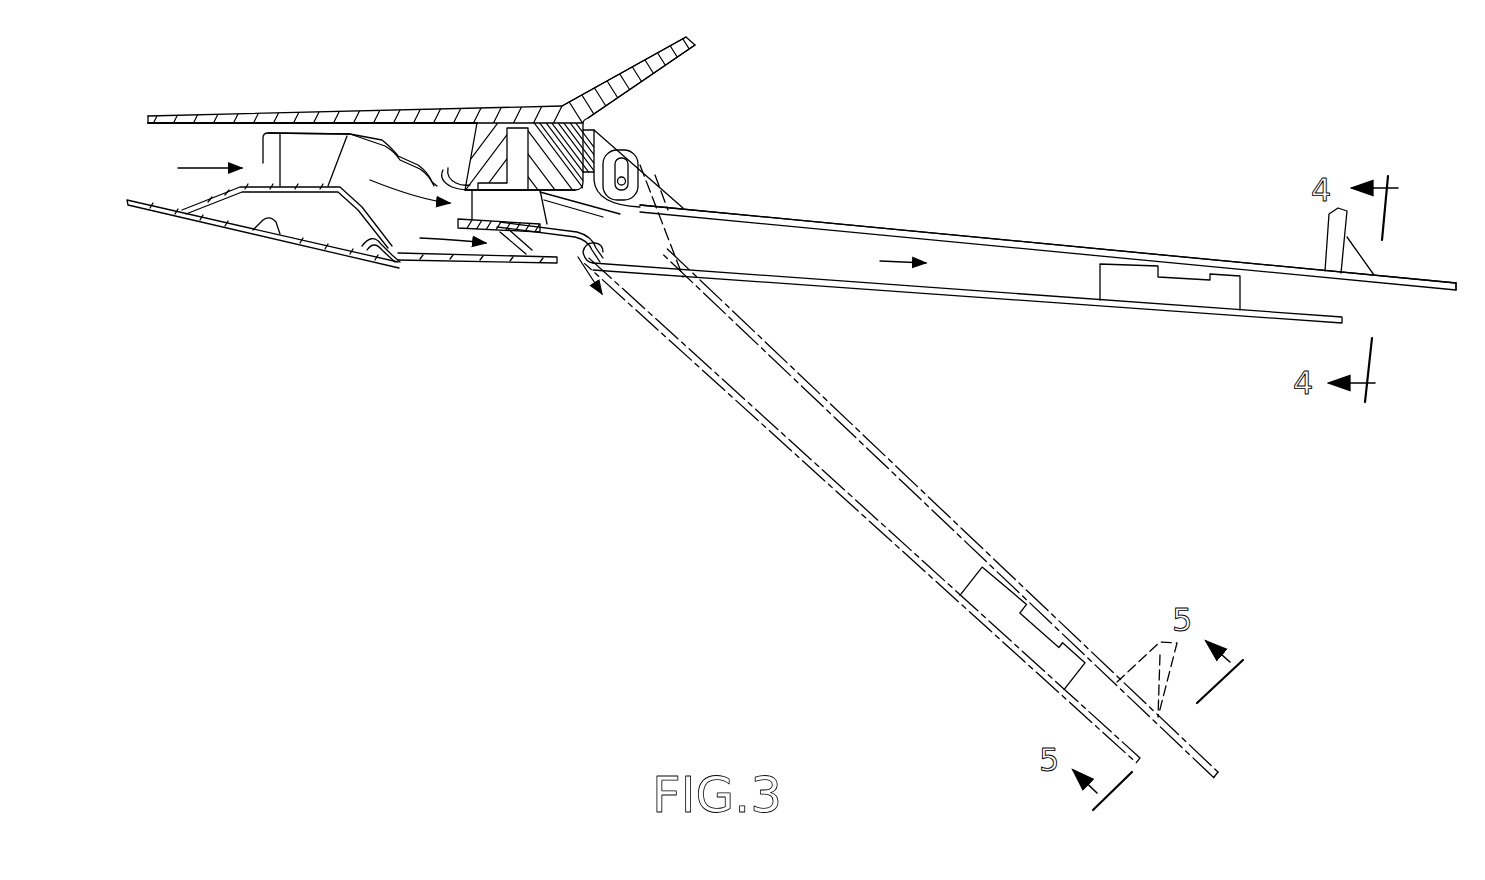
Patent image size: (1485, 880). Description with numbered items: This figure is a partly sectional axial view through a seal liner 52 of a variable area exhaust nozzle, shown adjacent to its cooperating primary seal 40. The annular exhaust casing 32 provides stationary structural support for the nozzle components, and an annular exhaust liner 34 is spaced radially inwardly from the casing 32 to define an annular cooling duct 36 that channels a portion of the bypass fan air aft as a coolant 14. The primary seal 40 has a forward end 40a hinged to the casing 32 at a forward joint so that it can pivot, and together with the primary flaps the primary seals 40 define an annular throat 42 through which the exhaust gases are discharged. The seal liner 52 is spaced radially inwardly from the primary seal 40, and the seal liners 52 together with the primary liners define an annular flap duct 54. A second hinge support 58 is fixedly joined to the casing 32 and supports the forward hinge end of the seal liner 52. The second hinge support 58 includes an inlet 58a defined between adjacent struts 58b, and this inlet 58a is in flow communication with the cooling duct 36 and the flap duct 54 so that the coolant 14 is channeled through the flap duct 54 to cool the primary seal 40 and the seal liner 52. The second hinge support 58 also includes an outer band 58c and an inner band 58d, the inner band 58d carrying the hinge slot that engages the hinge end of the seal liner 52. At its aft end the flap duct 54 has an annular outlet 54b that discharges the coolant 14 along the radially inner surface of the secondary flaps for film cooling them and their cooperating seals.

The coolant 14 is at (210, 165).
The exhaust casing 32 is at (458, 146).
The exhaust liner 34 is at (160, 213).
The cooling duct 36 is at (170, 163).
The primary seal 40 is at (820, 218).
The forward end of primary seal 40a is at (632, 152).
The annular throat 42 is at (1455, 287).
The seal liner 52 is at (1010, 305).
The flap duct 54 is at (773, 260).
The annular outlet of flap duct 54b is at (1368, 303).
The second hinge support 58 is at (452, 122).
The inlet of second hinge support 58a is at (515, 205).
The strut 58b is at (384, 258).
The outer band of second hinge support 58c is at (468, 185).
The inner band of second hinge support 58d is at (548, 242).